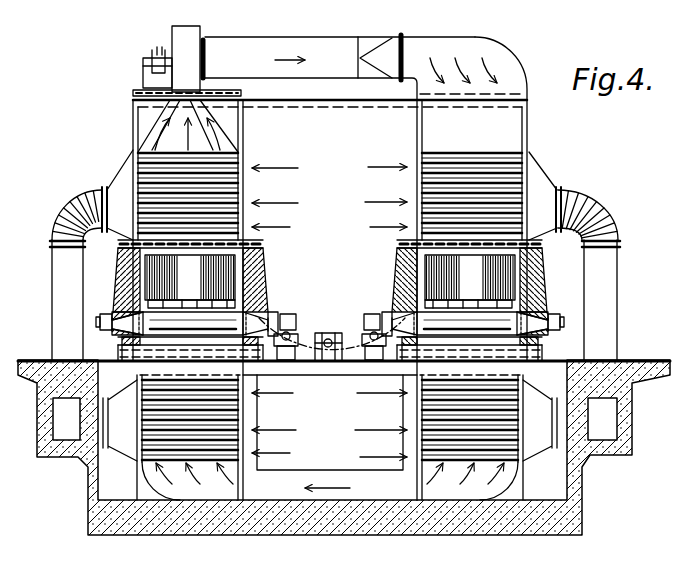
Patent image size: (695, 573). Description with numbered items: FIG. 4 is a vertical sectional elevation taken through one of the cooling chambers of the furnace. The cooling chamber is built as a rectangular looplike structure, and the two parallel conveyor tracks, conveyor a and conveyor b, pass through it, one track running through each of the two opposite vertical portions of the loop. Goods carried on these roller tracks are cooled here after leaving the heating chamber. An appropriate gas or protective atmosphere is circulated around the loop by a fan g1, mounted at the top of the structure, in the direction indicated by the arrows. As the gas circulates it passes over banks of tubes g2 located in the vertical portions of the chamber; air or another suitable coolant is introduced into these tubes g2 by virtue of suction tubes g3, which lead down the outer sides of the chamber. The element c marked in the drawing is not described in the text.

The fan g1 is at (178, 40).
The tubes g2 is at (217, 182).
The suction tubes g3 is at (603, 274).
The conveyor track a is at (445, 320).
The conveyor track b is at (215, 320).
The stator c is at (232, 278).